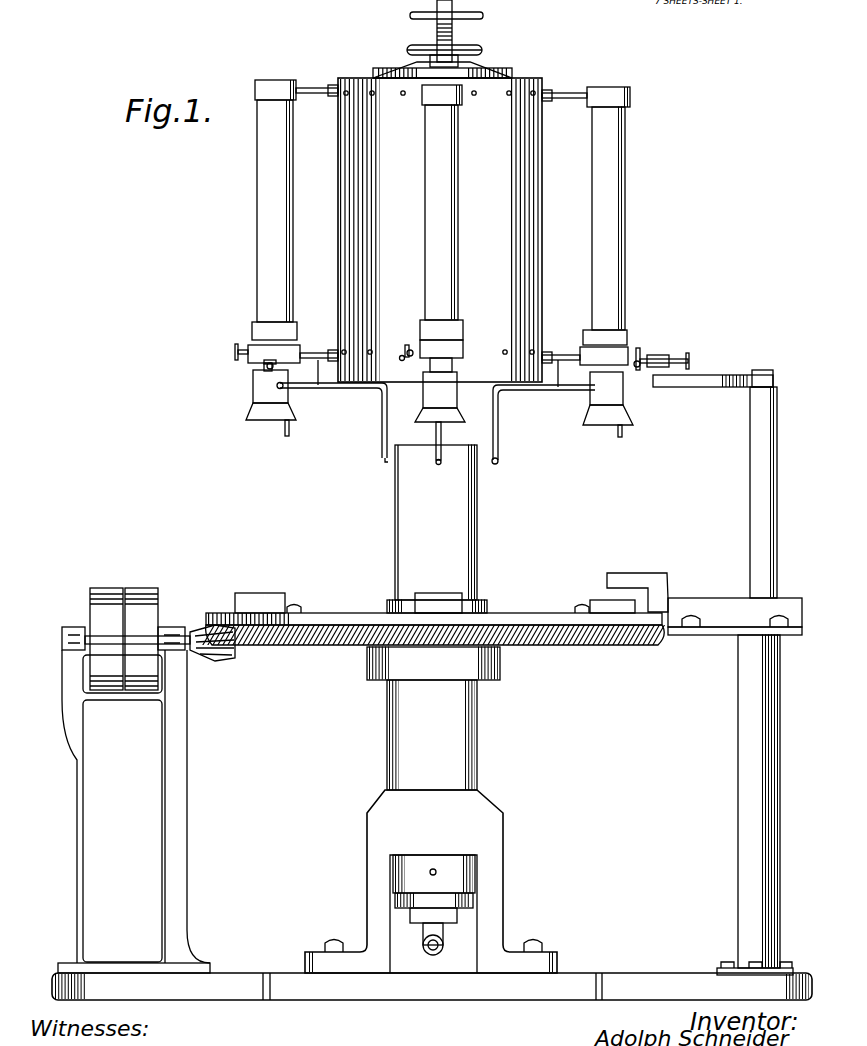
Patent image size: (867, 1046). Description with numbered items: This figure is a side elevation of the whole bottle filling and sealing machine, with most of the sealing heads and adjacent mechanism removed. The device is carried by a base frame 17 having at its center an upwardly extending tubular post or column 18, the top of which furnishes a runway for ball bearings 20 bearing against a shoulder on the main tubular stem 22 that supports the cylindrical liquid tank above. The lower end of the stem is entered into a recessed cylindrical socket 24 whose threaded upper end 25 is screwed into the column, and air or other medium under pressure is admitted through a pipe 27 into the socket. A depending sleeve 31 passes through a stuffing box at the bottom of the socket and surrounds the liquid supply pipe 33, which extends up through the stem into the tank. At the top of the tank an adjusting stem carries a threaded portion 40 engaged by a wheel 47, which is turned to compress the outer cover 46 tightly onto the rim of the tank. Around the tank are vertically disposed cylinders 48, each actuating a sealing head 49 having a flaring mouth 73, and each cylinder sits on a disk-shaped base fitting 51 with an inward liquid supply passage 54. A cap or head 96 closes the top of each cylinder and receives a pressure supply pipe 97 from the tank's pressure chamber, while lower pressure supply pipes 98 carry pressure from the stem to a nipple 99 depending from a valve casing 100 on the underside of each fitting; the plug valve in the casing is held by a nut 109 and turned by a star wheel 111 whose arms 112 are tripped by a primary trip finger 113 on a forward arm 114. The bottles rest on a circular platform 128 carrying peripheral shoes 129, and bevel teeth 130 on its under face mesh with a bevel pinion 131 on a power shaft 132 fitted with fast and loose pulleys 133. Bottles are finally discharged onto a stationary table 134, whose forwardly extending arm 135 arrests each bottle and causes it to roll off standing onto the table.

The base frame 17 is at (357, 998).
The tubular post or column 18 is at (503, 830).
The ball bearings 20 is at (500, 663).
The main tubular stem 22 is at (437, 529).
The recessed cylindrical socket 24 is at (475, 870).
The upper end of socket 25 is at (440, 230).
The pipe 27 is at (430, 872).
The depending sleeve 31 is at (473, 900).
The liquid supply pipe 33 is at (445, 935).
The threaded portion 40 is at (453, 22).
The outer cover 46 is at (512, 74).
The wheel 47 is at (482, 52).
The cylinders 48 is at (285, 220).
The sealing head 49 is at (268, 402).
The base fitting 51 is at (285, 324).
The liquid supply passage 54 is at (318, 385).
The flaring mouth 73 is at (288, 430).
The cap or head 96 is at (290, 82).
The pressure supply pipe 97 is at (317, 94).
The lower pressure supply pipes 98 is at (382, 420).
The nipple 99 is at (265, 372).
The valve casing 100 is at (258, 348).
The nut 109 is at (320, 352).
The star wheel 111 is at (262, 367).
The arms 112 is at (236, 352).
The primary trip finger 113 is at (656, 360).
The forward arm 114 is at (678, 375).
The circular platform 128 is at (335, 605).
The shoes 129 is at (262, 594).
The bevel teeth 130 is at (345, 647).
The bevel pinion 131 is at (218, 654).
The power shaft 132 is at (195, 628).
The fast and loose pulleys 133 is at (135, 590).
The stationary table 134 is at (706, 612).
The forwardly extending arm 135 is at (632, 574).